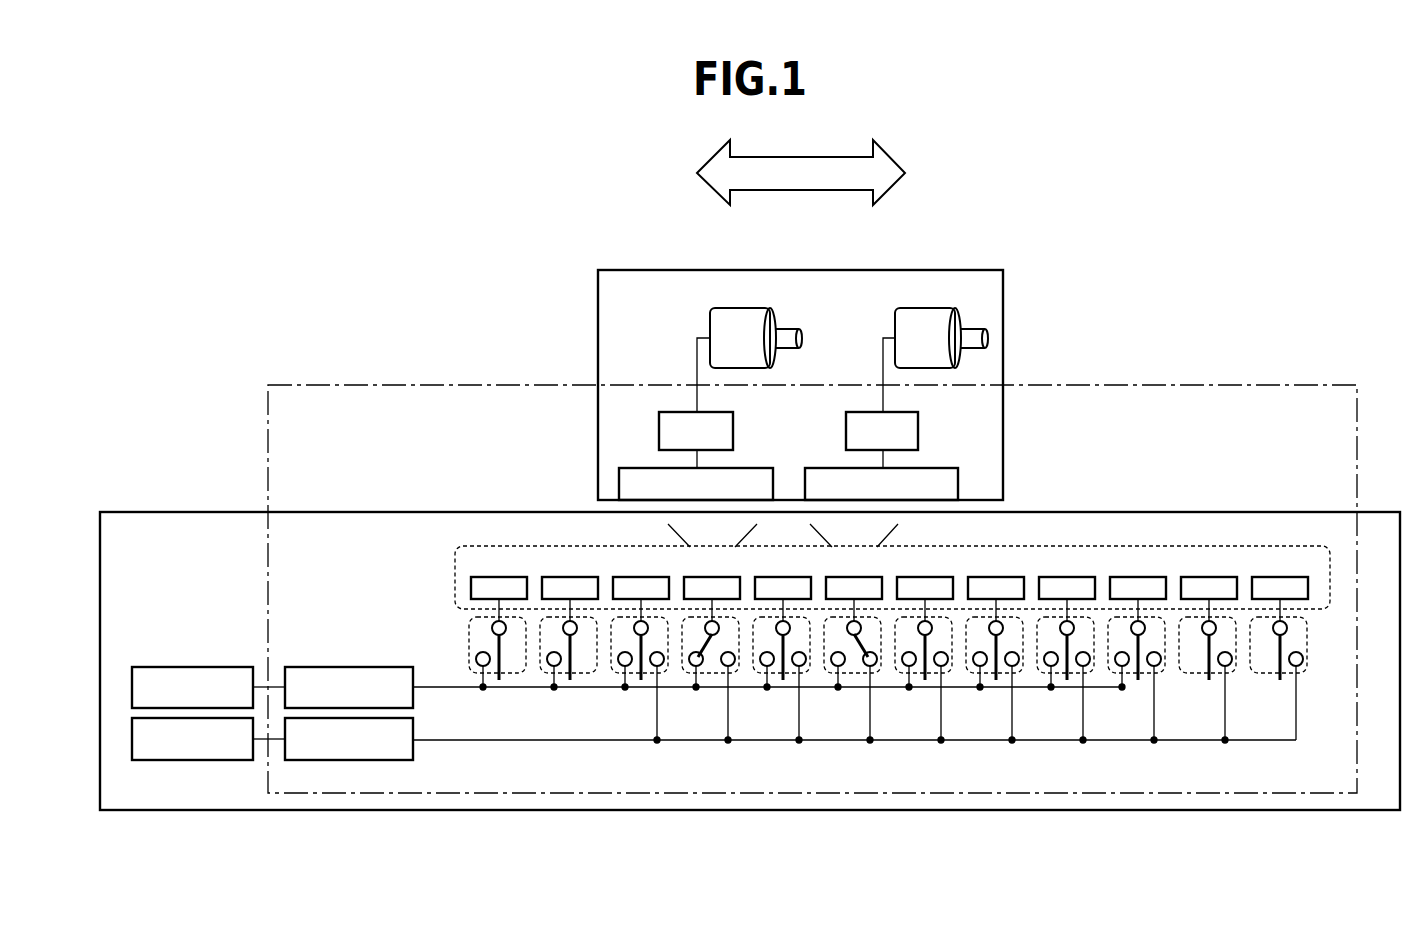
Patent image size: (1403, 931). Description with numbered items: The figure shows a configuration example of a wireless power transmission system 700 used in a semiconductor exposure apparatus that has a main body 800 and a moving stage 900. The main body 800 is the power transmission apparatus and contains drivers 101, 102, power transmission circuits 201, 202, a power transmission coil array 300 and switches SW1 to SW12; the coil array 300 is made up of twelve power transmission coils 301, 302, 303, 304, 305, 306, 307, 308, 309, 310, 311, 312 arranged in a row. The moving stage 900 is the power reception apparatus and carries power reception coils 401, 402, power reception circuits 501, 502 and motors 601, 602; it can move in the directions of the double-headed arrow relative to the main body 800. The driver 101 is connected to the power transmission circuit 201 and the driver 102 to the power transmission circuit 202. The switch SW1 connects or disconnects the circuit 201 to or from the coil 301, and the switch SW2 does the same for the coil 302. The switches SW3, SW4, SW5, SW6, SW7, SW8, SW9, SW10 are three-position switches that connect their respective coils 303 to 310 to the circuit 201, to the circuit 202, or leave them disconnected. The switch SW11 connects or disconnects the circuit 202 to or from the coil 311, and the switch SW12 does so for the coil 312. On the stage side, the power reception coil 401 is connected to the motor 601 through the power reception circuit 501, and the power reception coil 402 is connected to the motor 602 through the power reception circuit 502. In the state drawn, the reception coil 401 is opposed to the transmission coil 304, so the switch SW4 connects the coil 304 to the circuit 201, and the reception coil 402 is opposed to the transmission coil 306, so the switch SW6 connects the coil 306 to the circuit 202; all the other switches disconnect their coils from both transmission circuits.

The driver 101 is at (162, 667).
The driver 102 is at (162, 760).
The power transmission circuit 201 is at (315, 667).
The power transmission circuit 202 is at (315, 760).
The power transmission coil array 300 is at (437, 575).
The power transmission coil 301 is at (477, 577).
The power transmission coil 302 is at (548, 577).
The power transmission coil 303 is at (619, 577).
The power transmission coil 304 is at (690, 577).
The power transmission coil 305 is at (761, 577).
The power transmission coil 306 is at (832, 577).
The power transmission coil 307 is at (903, 577).
The power transmission coil 308 is at (974, 577).
The power transmission coil 309 is at (1045, 577).
The power transmission coil 310 is at (1116, 577).
The power transmission coil 311 is at (1187, 577).
The power transmission coil 312 is at (1258, 577).
The power reception coil 401 is at (728, 468).
The power reception coil 402 is at (913, 468).
The power reception circuit 501 is at (733, 420).
The power reception circuit 502 is at (918, 420).
The motor 601 is at (728, 308).
The motor 602 is at (915, 308).
The wireless power transmission system 700 is at (360, 385).
The main body 800 is at (182, 512).
The moving stage 900 is at (805, 270).
The switch SW1 is at (497, 645).
The switch SW2 is at (567, 645).
The switch SW3 is at (638, 645).
The switch SW4 is at (706, 645).
The switch SW5 is at (780, 645).
The switch SW6 is at (856, 645).
The switch SW7 is at (922, 645).
The switch SW8 is at (993, 645).
The switch SW9 is at (1064, 645).
The switch SW10 is at (1135, 645).
The switch SW11 is at (1206, 645).
The switch SW12 is at (1277, 645).